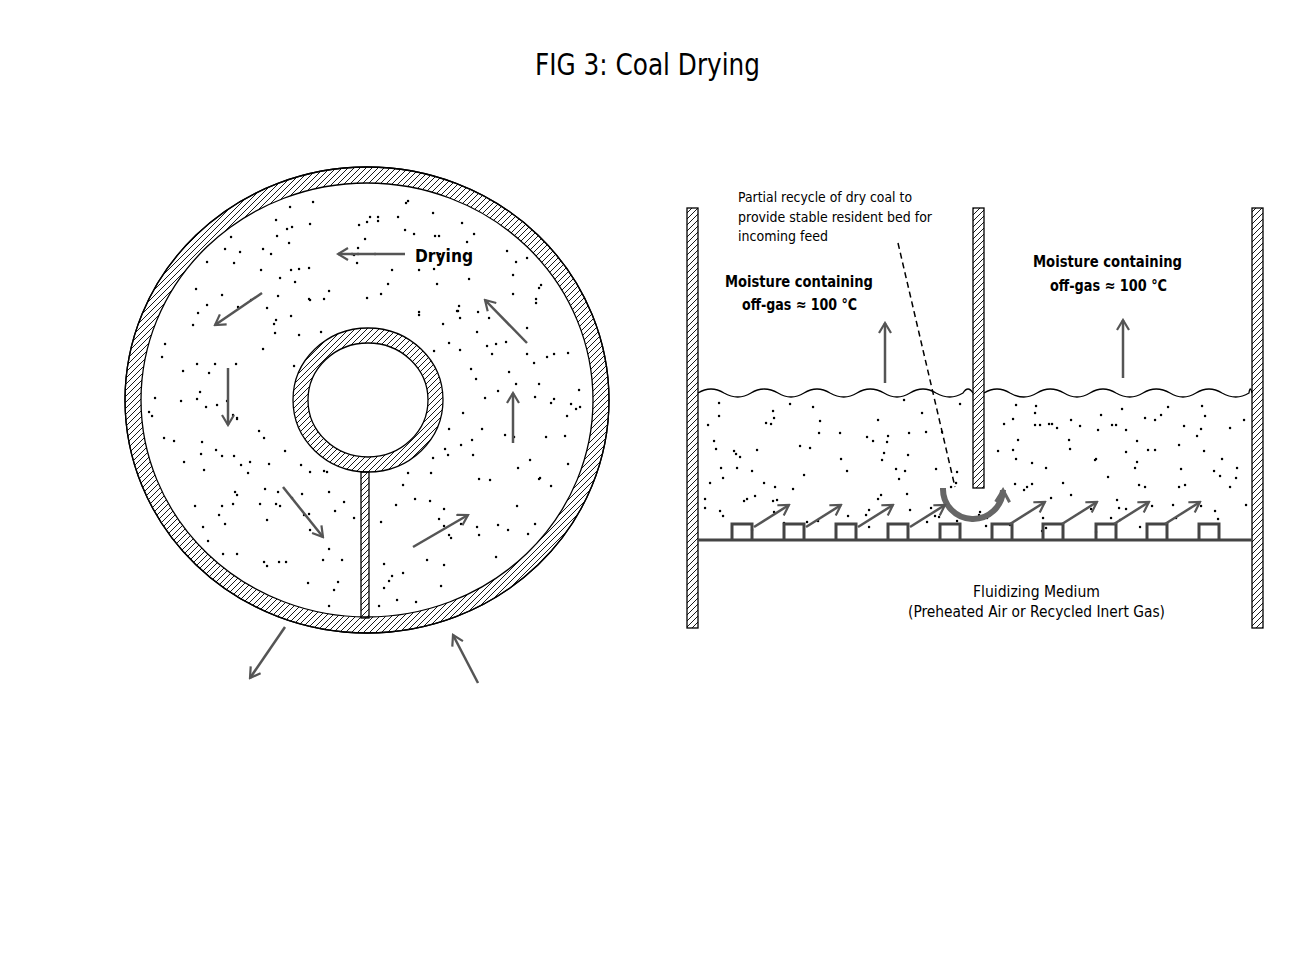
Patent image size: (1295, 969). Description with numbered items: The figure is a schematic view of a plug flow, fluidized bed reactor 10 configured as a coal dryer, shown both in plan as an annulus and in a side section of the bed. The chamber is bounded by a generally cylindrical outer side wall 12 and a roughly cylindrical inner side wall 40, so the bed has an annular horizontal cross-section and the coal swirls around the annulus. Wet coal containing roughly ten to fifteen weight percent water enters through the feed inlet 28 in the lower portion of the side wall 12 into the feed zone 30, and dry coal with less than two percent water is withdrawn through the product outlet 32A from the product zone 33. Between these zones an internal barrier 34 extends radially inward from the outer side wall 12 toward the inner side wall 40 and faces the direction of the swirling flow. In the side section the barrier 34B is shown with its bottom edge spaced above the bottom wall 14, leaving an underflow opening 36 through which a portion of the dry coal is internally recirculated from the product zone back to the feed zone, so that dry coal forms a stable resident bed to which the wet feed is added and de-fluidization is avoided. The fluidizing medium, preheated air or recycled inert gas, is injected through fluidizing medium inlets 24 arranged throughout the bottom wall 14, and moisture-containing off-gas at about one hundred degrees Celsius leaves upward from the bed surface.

The reactor 10 is at (208, 220).
The outer side wall 12 is at (493, 195).
The bottom wall 14 is at (822, 546).
The fluidizing medium inlets 24 is at (787, 538).
The feed inlet 28 is at (487, 620).
The feed zone 30 is at (445, 552).
The product outlet 32A is at (293, 628).
The product zone 33 is at (337, 551).
The internal barrier 34 is at (373, 590).
The internal barrier 34B is at (987, 222).
The underflow opening 36 is at (983, 503).
The inner side wall 40 is at (330, 342).